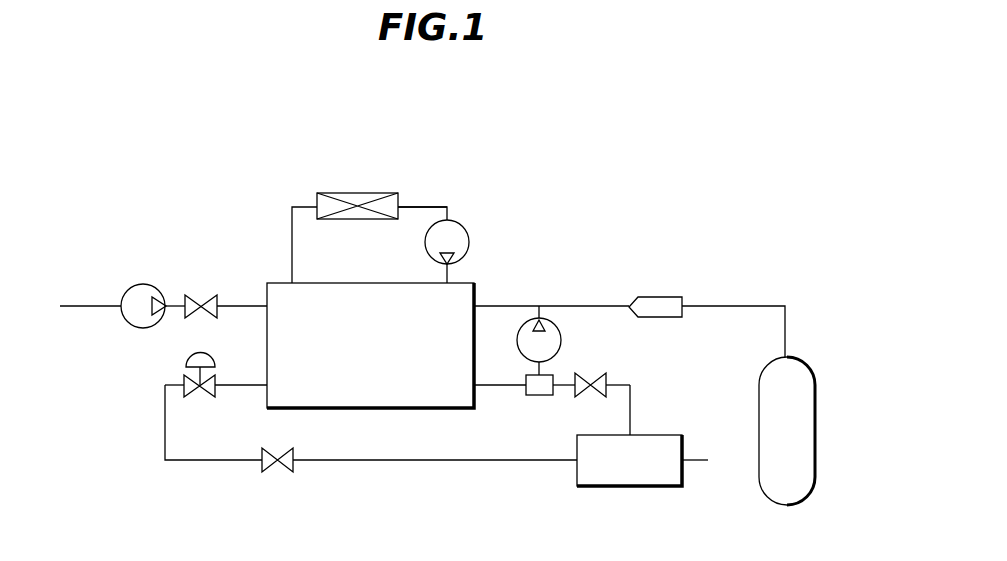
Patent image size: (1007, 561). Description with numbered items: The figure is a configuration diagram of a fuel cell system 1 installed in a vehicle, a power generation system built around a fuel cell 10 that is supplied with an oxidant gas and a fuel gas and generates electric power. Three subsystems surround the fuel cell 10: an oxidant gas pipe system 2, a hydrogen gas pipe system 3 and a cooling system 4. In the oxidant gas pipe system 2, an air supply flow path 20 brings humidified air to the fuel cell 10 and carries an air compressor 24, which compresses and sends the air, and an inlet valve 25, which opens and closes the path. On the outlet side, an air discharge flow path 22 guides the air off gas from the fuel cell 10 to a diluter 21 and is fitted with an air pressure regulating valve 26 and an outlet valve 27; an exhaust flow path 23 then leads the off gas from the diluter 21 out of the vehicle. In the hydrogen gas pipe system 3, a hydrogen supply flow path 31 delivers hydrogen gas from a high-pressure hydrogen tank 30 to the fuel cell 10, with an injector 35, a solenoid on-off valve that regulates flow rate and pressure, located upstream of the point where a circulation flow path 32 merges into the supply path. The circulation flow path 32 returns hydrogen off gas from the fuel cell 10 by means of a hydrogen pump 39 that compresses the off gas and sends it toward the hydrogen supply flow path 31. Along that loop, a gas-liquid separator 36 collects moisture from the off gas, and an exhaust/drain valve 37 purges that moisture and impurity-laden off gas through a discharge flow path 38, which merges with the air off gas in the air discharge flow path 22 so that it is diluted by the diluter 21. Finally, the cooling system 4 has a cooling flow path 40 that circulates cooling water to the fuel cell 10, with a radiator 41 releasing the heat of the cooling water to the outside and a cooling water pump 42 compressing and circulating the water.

The fuel cell system 1 is at (735, 243).
The oxidant gas pipe system 2 is at (168, 276).
The hydrogen gas pipe system 3 is at (579, 292).
The cooling system 4 is at (278, 208).
The fuel cell 10 is at (475, 283).
The air supply flow path 20 is at (98, 306).
The diluter 21 is at (643, 488).
The air discharge flow path 22 is at (385, 462).
The exhaust flow path 23 is at (696, 462).
The air compressor 24 is at (132, 328).
The inlet valve 25 is at (193, 295).
The air pressure regulating valve 26 is at (203, 397).
The outlet valve 27 is at (278, 472).
The hydrogen tank 30 is at (800, 505).
The hydrogen supply flow path 31 is at (760, 306).
The circulation flow path 32 is at (542, 372).
The injector 35 is at (662, 297).
The gas-liquid separator 36 is at (537, 397).
The exhaust/drain valve 37 is at (604, 382).
The discharge flow path 38 is at (631, 410).
The hydrogen pump 39 is at (562, 340).
The cooling flow path 40 is at (433, 207).
The radiator 41 is at (368, 193).
The cooling water pump 42 is at (470, 232).